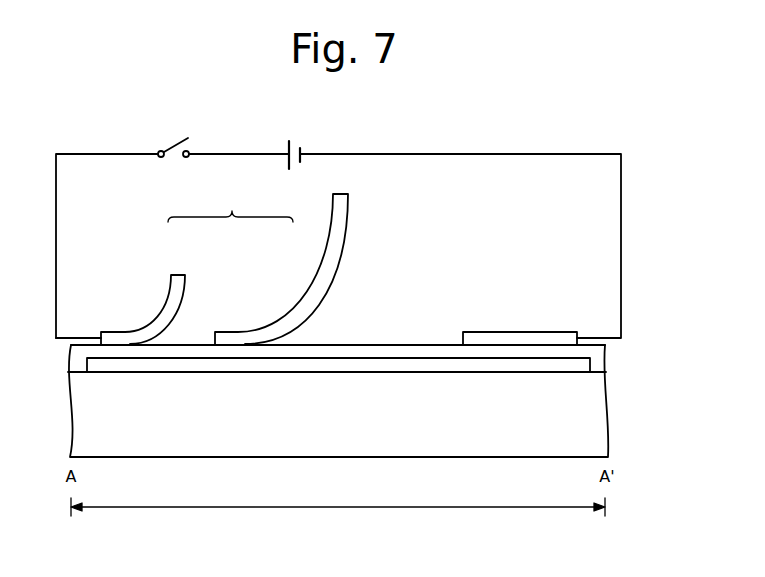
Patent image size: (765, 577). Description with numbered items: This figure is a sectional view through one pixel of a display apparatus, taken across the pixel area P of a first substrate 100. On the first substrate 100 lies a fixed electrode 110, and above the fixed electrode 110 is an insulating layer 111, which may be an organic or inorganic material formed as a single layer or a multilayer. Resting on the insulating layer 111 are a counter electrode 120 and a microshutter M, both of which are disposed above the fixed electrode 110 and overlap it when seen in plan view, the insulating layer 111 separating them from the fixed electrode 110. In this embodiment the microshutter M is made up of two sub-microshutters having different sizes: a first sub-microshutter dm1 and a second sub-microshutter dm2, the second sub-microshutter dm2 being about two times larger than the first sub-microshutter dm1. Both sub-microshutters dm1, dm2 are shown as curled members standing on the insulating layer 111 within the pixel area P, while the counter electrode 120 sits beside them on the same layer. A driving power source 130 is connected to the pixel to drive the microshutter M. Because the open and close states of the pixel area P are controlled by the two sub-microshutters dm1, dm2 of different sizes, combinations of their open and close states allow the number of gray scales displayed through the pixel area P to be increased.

The first substrate 100 is at (596, 424).
The fixed electrode 110 is at (582, 365).
The insulating layer 111 is at (600, 350).
The counter electrode 120 is at (536, 338).
The driving power source 130 is at (621, 218).
The first sub-microshutter dm1 is at (178, 275).
The second sub-microshutter dm2 is at (327, 247).
The microshutter M is at (230, 206).
The pixel area P is at (338, 515).